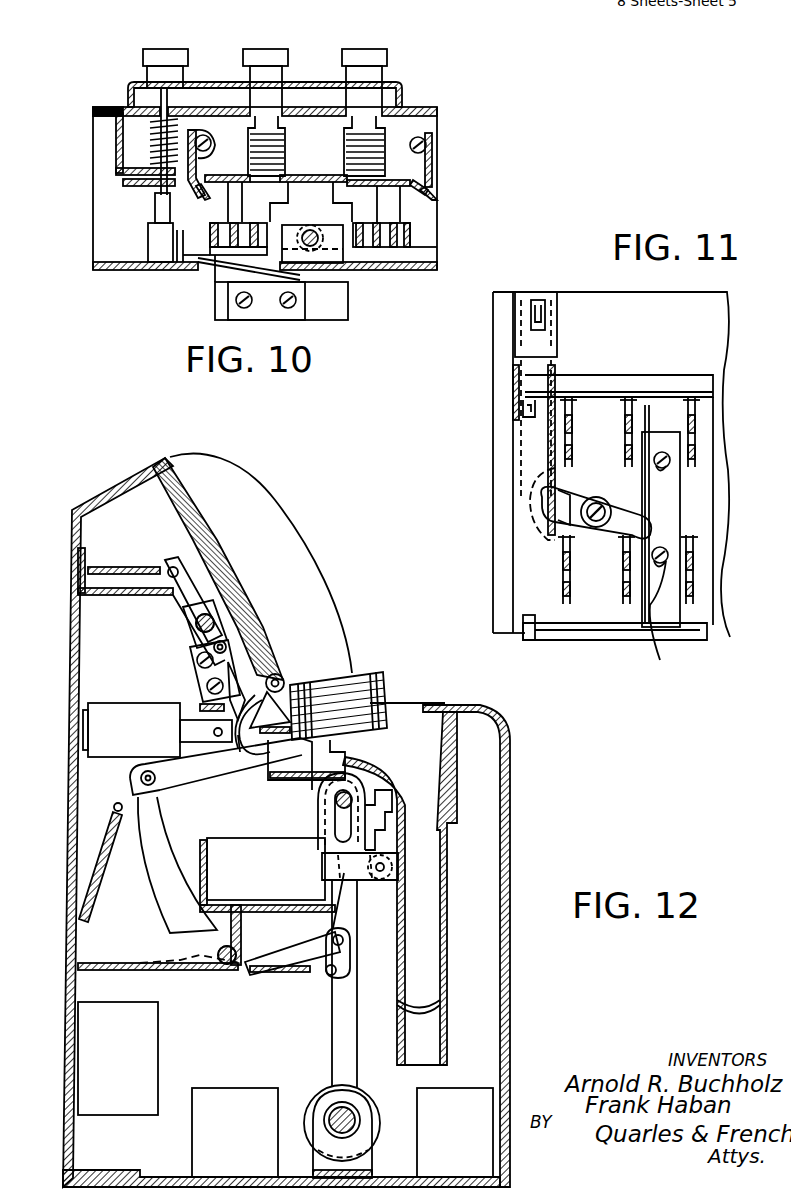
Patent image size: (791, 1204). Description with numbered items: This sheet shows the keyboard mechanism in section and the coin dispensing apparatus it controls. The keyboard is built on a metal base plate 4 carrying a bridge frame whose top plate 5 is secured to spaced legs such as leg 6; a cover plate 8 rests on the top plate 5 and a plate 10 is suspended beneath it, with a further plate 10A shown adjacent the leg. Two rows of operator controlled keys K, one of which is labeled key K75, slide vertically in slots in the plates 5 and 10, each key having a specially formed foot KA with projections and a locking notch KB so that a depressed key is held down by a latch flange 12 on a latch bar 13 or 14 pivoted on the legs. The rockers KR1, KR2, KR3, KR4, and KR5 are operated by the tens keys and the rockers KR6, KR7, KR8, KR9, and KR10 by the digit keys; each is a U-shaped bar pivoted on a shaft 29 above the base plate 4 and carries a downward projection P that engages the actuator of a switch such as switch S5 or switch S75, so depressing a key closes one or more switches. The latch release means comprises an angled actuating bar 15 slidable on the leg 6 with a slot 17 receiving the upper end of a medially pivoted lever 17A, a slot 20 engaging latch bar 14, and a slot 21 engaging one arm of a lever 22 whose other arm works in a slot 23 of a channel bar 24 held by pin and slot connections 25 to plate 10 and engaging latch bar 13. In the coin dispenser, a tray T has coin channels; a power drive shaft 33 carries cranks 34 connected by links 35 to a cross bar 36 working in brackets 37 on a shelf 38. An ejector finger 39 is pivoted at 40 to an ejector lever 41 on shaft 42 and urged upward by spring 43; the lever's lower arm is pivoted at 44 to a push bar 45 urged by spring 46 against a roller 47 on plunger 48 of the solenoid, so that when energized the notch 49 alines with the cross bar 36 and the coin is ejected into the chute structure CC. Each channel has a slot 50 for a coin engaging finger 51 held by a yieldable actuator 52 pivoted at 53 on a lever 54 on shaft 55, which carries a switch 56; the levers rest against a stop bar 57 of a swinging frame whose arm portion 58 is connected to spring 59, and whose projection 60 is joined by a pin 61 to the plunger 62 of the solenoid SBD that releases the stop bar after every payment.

In FIG. 10, the base plate 4 is at (103, 270).
In FIG. 10, the top plate 5 is at (437, 107).
In FIG. 11, the top plate 5 is at (715, 307).
In FIG. 10, the leg 6 is at (100, 145).
In FIG. 10, the cover plate 8 is at (400, 90).
In FIG. 10, the plate 10 is at (312, 175).
In FIG. 11, the plate 10 is at (713, 425).
In FIG. 10, the plate 10A is at (120, 180).
In FIG. 10, the latch flange 12 is at (450, 205).
In FIG. 10, the latch bar 13 is at (427, 143).
In FIG. 11, the latch bar 13 is at (625, 640).
In FIG. 10, the latch bar 14 is at (205, 130).
In FIG. 11, the latch bar 14 is at (642, 375).
In FIG. 11, the actuating bar 15 is at (522, 455).
In FIG. 11, the slot 17 is at (548, 322).
In FIG. 11, the lever 17A is at (538, 300).
In FIG. 11, the slot 20 is at (553, 395).
In FIG. 11, the slot 21 is at (545, 537).
In FIG. 11, the lever 22 is at (578, 505).
In FIG. 11, the slot 23 is at (649, 500).
In FIG. 11, the channel bar 24 is at (665, 527).
In FIG. 11, the pin and slot connections 25 is at (662, 452).
In FIG. 10, the shaft 29 is at (316, 248).
In FIG. 10, the keys K is at (330, 40).
In FIG. 10, the coil K75 is at (160, 49).
In FIG. 10, the foot KA is at (314, 196).
In FIG. 11, the foot KA is at (626, 448).
In FIG. 10, the locking notch KB is at (206, 180).
In FIG. 11, the locking notch KB is at (568, 400).
In FIG. 10, the rocker KR1 is at (258, 232).
In FIG. 10, the rocker KR2 is at (240, 232).
In FIG. 10, the rocker KR3 is at (248, 200).
In FIG. 10, the rocker KR4 is at (222, 222).
In FIG. 10, the rocker KR5 is at (175, 240).
In FIG. 10, the rocker KR6 is at (362, 248).
In FIG. 10, the rocker KR7 is at (378, 248).
In FIG. 10, the rocker KR8 is at (395, 248).
In FIG. 10, the rocker KR9 is at (400, 250).
In FIG. 10, the rocker KR10 is at (408, 232).
In FIG. 10, the projection P is at (222, 250).
In FIG. 10, the switch S5 is at (245, 320).
In FIG. 10, the switch S75 is at (160, 262).
In FIG. 12, the tray T is at (215, 490).
In FIG. 12, the chute structure CC is at (408, 722).
In FIG. 12, the solenoid SBD is at (100, 705).
In FIG. 12, the power drive shaft 33 is at (352, 1112).
In FIG. 12, the crank 34 is at (312, 1100).
In FIG. 12, the link 35 is at (340, 1042).
In FIG. 12, the cross bar 36 is at (338, 801).
In FIG. 12, the bracket 37 is at (363, 785).
In FIG. 12, the shelf 38 is at (300, 950).
In FIG. 12, the coin ejector finger 39 is at (205, 762).
In FIG. 12, the pivotal connection 40 is at (155, 785).
In FIG. 12, the ejector lever 41 is at (150, 900).
In FIG. 12, the shaft 42 is at (205, 970).
In FIG. 12, the spring 43 is at (85, 855).
In FIG. 12, the pivotal connection 44 is at (352, 950).
In FIG. 12, the push bar 45 is at (350, 900).
In FIG. 12, the spring 46 is at (290, 975).
In FIG. 12, the roller 47 is at (380, 880).
In FIG. 12, the plunger 48 is at (388, 855).
In FIG. 12, the notch 49 is at (392, 800).
In FIG. 12, the slot 50 is at (282, 678).
In FIG. 12, the coin engaging finger 51 is at (310, 740).
In FIG. 12, the switch actuator 52 is at (248, 745).
In FIG. 12, the pivot 53 is at (226, 645).
In FIG. 12, the lever 54 is at (222, 658).
In FIG. 12, the shaft 55 is at (183, 630).
In FIG. 12, the switch 56 is at (190, 672).
In FIG. 12, the stop bar 57 is at (200, 708).
In FIG. 12, the arm portion 58 is at (185, 545).
In FIG. 12, the spring 59 is at (115, 567).
In FIG. 12, the projection 60 is at (135, 703).
In FIG. 12, the pin 61 is at (180, 733).
In FIG. 12, the plunger 62 is at (188, 760).